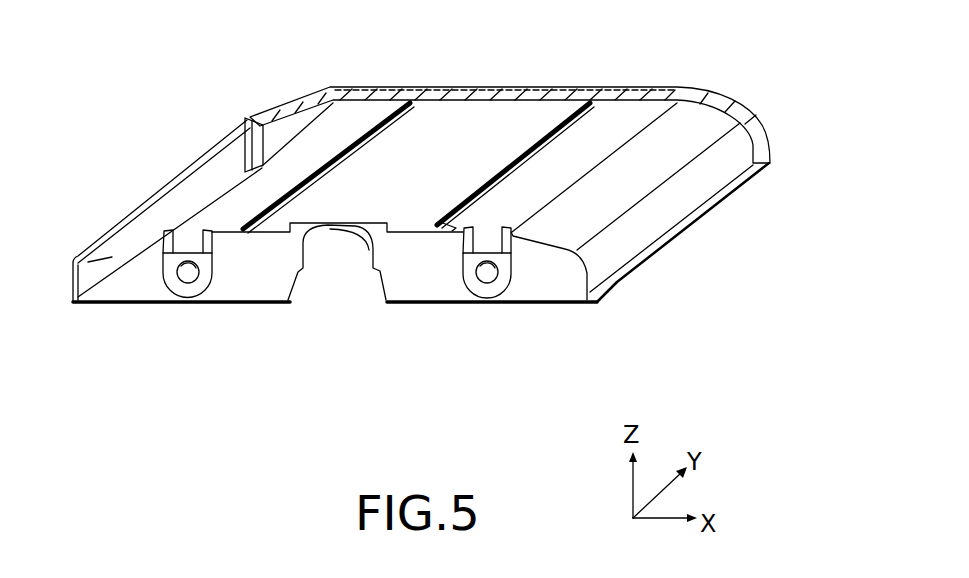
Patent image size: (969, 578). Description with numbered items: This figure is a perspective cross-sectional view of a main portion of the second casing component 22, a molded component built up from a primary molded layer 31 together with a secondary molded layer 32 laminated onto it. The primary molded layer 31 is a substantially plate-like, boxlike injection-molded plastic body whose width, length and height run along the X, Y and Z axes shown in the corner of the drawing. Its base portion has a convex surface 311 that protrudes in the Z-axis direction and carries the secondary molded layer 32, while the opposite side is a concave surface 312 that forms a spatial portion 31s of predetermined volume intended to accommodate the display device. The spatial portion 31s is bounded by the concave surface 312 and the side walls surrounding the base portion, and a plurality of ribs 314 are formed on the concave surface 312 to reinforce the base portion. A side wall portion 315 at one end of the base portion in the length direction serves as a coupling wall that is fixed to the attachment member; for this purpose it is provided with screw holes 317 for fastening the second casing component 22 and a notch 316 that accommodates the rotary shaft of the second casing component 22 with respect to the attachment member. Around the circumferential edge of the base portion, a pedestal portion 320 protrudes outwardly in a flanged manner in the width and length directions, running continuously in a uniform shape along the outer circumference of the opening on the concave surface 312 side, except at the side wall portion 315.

The second casing component 22 is at (737, 62).
The convex surface 311 is at (464, 99).
The ribs 314 is at (375, 118).
The secondary molded layer 32 is at (178, 185).
The pedestal portion 320 is at (773, 163).
The primary molded layer 31 is at (238, 303).
The screw holes 317 is at (188, 272).
The side wall portion 315 is at (535, 282).
The notch 316 is at (368, 251).
The spatial portion 31s is at (417, 192).
The concave surface 312 is at (620, 192).